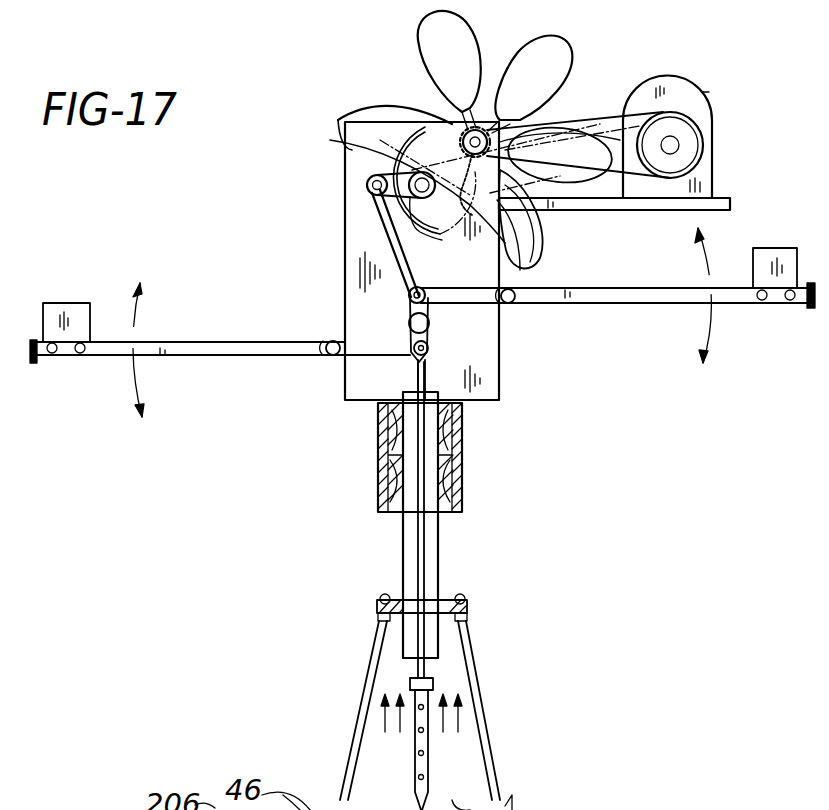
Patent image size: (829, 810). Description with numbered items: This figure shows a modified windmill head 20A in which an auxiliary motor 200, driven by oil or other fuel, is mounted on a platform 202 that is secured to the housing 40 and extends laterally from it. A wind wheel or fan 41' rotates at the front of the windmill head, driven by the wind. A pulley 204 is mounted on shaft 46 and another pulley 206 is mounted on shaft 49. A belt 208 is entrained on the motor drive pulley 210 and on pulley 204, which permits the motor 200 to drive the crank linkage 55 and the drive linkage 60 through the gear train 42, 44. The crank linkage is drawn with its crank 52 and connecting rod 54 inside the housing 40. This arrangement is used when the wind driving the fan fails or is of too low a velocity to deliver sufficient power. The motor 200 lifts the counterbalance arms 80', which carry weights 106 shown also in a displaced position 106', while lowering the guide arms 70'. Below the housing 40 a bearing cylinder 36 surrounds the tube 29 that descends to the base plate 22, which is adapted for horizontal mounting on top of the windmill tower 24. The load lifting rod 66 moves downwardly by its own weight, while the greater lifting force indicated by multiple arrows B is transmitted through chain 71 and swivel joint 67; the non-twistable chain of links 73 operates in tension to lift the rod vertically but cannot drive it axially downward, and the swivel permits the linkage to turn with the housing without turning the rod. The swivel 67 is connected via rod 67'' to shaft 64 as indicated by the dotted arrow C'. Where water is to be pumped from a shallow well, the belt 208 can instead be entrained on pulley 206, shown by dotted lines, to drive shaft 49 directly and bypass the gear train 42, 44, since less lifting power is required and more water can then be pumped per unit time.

The housing 40 is at (345, 241).
The windmill head 20A is at (330, 176).
The shaft 49 is at (430, 232).
The wind wheel or fan 41' is at (461, 69).
The gear train 42 is at (530, 124).
The pulley 204 is at (440, 118).
The gear train 44 is at (533, 232).
The pulley 206 is at (538, 258).
The shaft 46 is at (481, 128).
The belt 208 is at (612, 120).
The auxiliary motor 200 is at (690, 88).
The motor drive pulley 210 is at (690, 148).
The platform 202 is at (657, 212).
The crank 52 is at (370, 172).
The connecting rod 54 is at (398, 232).
The crank linkage 55 is at (398, 268).
The drive linkage 60 is at (408, 309).
The shaft 64 is at (412, 327).
The dotted arrow C' is at (495, 344).
The counterbalance arms 80' is at (422, 355).
The weight 106 is at (429, 275).
The weight position 106' is at (798, 344).
The guide arms 70' is at (359, 393).
The bearing cylinder 36 is at (462, 498).
The tube 29 is at (403, 543).
The rod 67'' is at (475, 520).
The base plate 22 is at (452, 594).
The windmill tower 24 is at (342, 775).
The swivel joint 67 is at (477, 661).
The multiple arrows B is at (458, 710).
The chain of links 73 is at (423, 765).
The chain 71 is at (418, 754).
The load lifting rod 66 is at (408, 809).